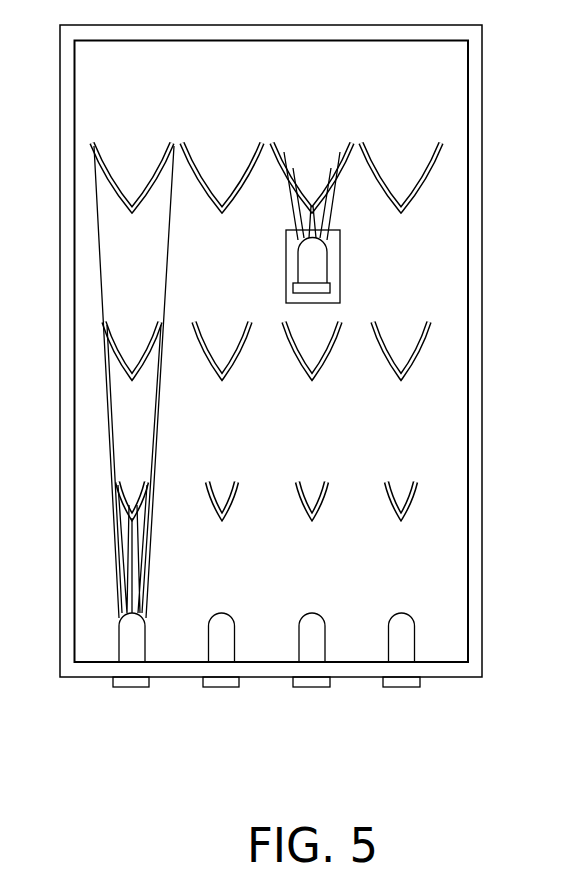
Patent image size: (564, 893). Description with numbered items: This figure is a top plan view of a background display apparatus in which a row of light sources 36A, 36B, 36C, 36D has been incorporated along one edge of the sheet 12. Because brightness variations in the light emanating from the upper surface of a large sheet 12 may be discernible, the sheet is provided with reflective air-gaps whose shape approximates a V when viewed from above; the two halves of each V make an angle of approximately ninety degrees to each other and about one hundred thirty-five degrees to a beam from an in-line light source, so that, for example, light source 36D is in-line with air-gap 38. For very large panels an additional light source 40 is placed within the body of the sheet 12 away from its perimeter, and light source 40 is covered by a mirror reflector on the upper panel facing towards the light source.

The sheet 12 is at (212, 110).
The light source 36A is at (135, 687).
The light source 36B is at (223, 687).
The light source 36C is at (313, 687).
The light source 36D is at (403, 687).
The air-gap 38 is at (412, 325).
The light source 40 is at (318, 255).